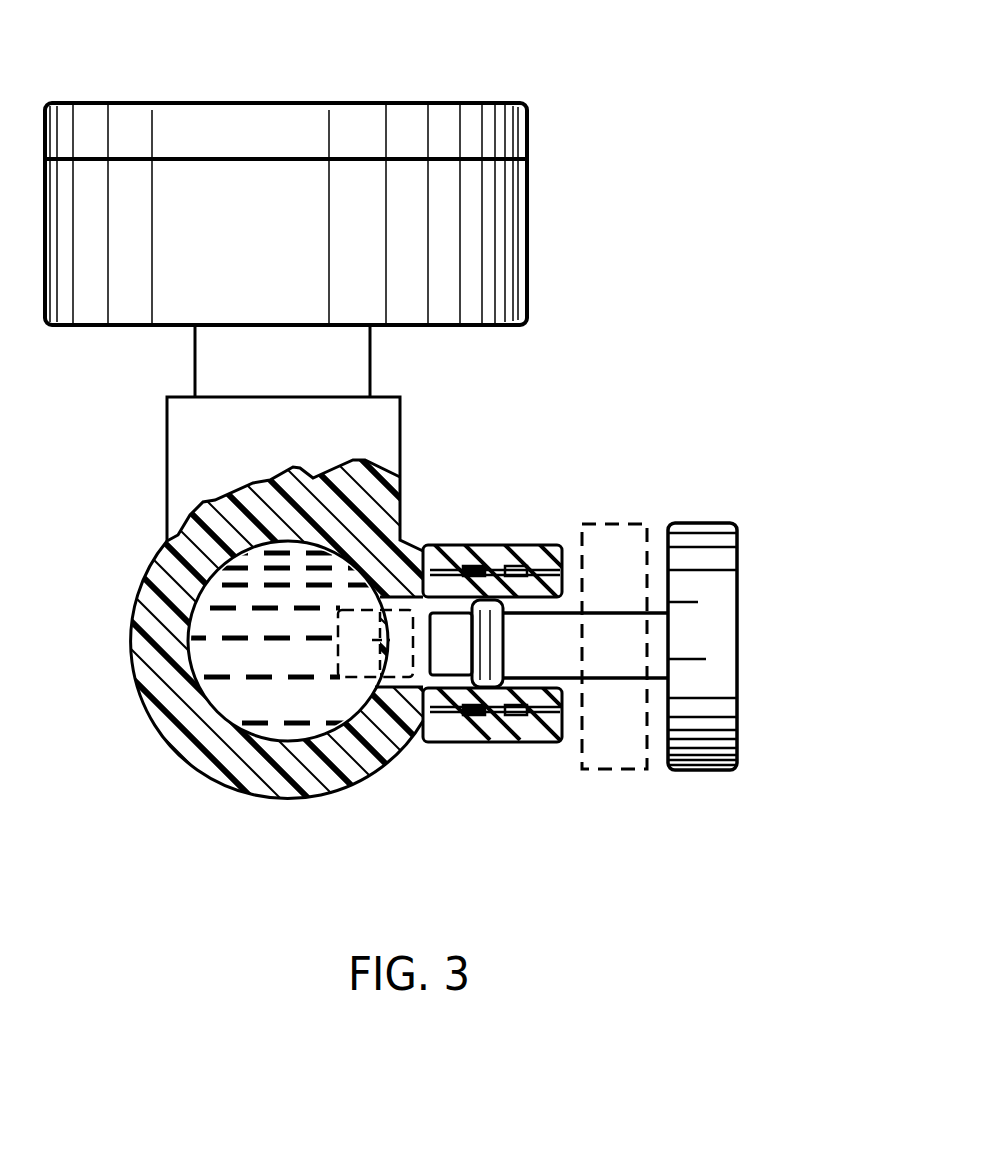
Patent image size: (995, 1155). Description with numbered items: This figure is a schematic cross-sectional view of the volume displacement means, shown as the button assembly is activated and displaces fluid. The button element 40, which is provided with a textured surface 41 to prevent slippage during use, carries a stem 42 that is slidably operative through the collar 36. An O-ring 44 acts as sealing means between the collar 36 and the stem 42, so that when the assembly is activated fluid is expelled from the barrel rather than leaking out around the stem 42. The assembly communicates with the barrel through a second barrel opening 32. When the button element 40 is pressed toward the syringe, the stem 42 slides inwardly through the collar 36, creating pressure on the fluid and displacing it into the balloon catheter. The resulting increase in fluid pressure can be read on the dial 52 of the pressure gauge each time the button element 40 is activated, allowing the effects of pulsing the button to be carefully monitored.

The dial 52 is at (493, 103).
The second barrel opening 32 is at (522, 590).
The collar 36 is at (552, 560).
The stem 42 is at (598, 637).
The textured surface 41 is at (737, 593).
The button element 40 is at (695, 725).
The O-ring 44 is at (490, 660).